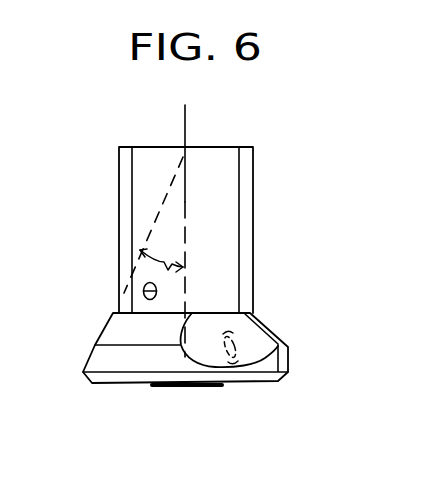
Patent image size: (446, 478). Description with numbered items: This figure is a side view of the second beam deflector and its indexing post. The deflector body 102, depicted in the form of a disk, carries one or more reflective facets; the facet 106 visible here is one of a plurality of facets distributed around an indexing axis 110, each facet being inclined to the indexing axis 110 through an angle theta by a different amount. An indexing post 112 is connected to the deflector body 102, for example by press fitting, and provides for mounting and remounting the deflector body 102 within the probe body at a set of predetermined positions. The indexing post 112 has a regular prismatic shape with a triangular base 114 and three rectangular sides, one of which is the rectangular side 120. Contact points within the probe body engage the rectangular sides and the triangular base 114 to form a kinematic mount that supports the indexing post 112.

The deflector body 102 is at (130, 355).
The facet 106 is at (252, 348).
The indexing axis 110 is at (182, 118).
The indexing post 112 is at (250, 230).
The triangular base 114 is at (213, 147).
The rectangular side 120 is at (141, 214).